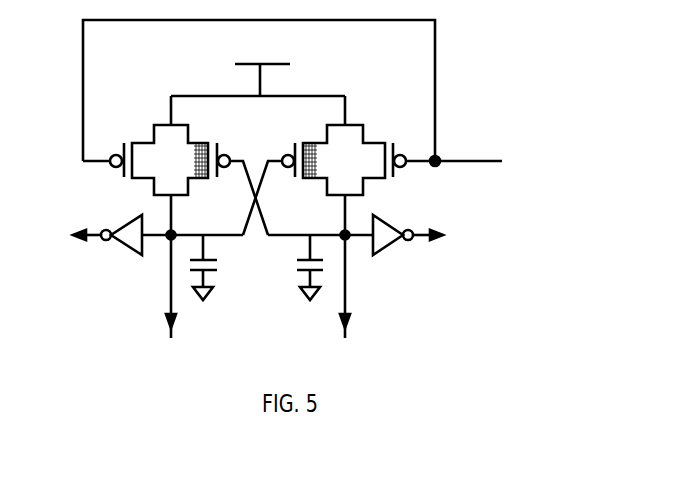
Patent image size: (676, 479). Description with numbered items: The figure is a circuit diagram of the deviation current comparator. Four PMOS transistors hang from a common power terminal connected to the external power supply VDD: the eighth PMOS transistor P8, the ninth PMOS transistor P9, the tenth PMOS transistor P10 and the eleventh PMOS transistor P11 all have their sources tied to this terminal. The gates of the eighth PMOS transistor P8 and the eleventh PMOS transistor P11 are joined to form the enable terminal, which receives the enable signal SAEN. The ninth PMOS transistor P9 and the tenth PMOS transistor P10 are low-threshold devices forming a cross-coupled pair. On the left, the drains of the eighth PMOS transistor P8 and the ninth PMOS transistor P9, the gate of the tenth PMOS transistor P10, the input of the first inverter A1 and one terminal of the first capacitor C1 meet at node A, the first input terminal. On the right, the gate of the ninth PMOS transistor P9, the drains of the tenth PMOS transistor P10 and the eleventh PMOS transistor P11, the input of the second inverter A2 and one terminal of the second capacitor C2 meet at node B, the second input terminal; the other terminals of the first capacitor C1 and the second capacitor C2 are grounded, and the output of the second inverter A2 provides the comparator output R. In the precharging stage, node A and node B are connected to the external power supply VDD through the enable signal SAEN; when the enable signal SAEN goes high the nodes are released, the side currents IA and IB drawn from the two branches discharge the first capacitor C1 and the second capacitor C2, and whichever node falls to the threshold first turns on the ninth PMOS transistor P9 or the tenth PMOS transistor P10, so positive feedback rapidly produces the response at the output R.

The eighth PMOS transistor P8 is at (145, 150).
The ninth PMOS transistor P9 is at (233, 170).
The tenth PMOS transistor P10 is at (314, 170).
The eleventh PMOS transistor P11 is at (404, 141).
The external power supply VDD is at (258, 79).
The enable signal SAEN is at (473, 144).
The node A is at (192, 217).
The node B is at (320, 217).
The first inverter A1 is at (107, 246).
The second inverter A2 is at (408, 246).
The output R is at (461, 235).
The first capacitor C1 is at (220, 267).
The second capacitor C2 is at (295, 267).
The current IA is at (154, 286).
The current IB is at (365, 286).